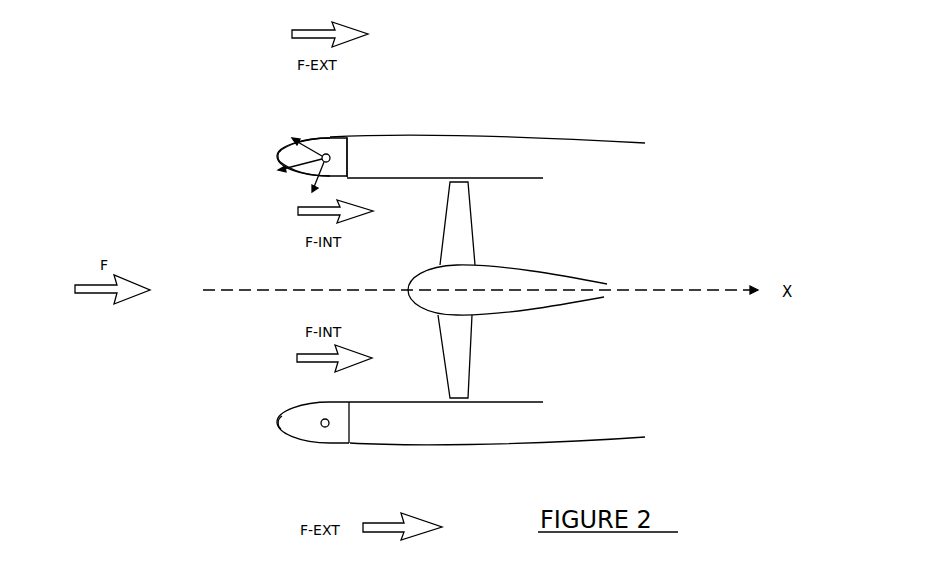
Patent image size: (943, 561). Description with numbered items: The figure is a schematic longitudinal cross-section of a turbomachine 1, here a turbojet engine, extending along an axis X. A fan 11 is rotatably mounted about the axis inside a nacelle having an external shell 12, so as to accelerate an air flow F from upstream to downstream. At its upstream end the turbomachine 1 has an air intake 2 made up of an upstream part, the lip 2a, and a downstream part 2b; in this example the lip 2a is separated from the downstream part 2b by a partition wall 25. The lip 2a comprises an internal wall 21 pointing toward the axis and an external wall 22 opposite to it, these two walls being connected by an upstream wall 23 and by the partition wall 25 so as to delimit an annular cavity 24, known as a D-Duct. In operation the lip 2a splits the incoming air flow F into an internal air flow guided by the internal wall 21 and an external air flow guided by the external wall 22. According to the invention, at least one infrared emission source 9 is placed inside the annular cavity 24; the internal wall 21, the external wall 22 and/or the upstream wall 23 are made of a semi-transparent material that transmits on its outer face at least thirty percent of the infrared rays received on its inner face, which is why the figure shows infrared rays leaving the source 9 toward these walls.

The turbomachine 1 is at (662, 198).
The air intake 2 is at (273, 412).
The lip 2a is at (342, 457).
The downstream part 2b is at (402, 457).
The infrared emission source 9 is at (326, 154).
The fan 11 is at (410, 287).
The external shell 12 is at (418, 400).
The internal wall 21 is at (291, 176).
The external wall 22 is at (310, 138).
The upstream wall 23 is at (275, 155).
The annular cavity 24 is at (303, 422).
The partition wall 25 is at (349, 139).